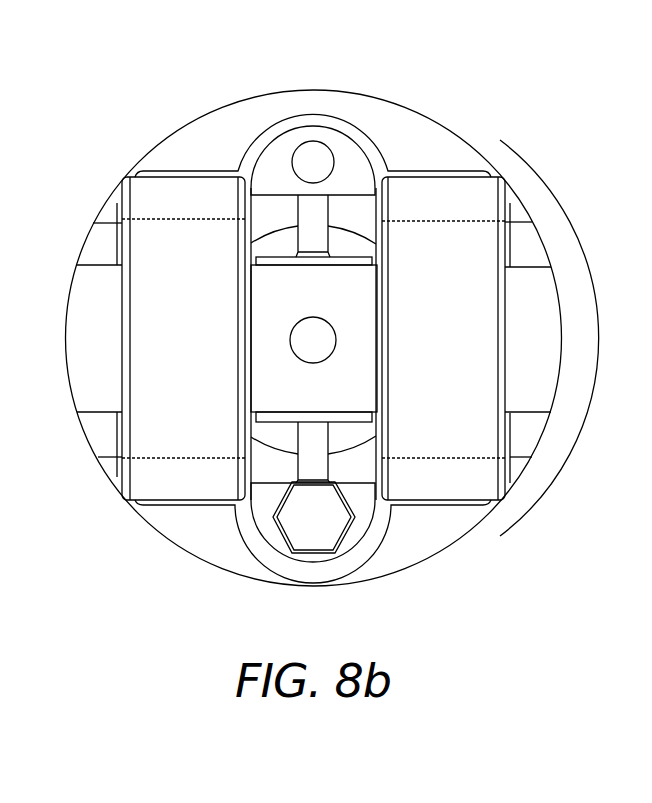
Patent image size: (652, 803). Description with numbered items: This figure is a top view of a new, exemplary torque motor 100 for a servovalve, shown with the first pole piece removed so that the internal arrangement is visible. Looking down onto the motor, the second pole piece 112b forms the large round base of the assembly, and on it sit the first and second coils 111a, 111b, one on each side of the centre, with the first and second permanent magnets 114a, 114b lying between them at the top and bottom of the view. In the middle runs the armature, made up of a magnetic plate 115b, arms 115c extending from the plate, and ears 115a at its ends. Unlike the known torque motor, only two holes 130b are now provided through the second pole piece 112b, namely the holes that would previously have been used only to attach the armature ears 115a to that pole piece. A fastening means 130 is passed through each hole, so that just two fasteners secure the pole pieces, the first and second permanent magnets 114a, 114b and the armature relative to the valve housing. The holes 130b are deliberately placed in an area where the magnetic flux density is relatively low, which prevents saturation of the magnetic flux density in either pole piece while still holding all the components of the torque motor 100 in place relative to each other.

The torque motor 100 is at (387, 64).
The first coil 111a is at (160, 193).
The second coil 111b is at (467, 192).
The second pole piece 112b is at (530, 240).
The first permanent magnet 114a is at (408, 118).
The second permanent magnet 114b is at (433, 547).
The ears 115a is at (273, 157).
The magnetic plate 115b is at (553, 342).
The arms 115c is at (303, 212).
The fastening means 130 is at (312, 542).
The holes 130b is at (311, 152).